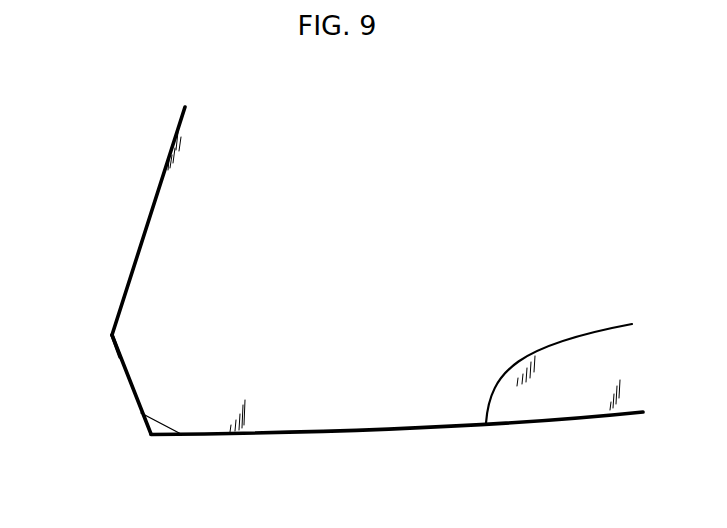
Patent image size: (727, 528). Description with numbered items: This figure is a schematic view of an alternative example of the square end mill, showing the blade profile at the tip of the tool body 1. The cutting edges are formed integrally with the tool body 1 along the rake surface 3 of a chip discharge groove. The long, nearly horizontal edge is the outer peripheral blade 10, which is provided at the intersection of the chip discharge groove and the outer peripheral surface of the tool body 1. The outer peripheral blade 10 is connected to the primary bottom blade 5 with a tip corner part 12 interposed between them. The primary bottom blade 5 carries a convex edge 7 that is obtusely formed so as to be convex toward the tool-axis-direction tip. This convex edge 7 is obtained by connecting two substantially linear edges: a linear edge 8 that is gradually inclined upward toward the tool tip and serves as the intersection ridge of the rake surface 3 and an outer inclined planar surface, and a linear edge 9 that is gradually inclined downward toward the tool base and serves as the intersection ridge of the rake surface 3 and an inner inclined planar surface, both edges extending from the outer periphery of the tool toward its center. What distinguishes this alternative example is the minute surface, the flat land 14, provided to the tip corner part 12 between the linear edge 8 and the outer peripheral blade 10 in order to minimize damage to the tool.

The tool body 1 is at (578, 418).
The rake surface 3 is at (405, 405).
The primary bottom blade 5 is at (80, 232).
The convex edge 7 is at (102, 331).
The linear edge 8 is at (125, 373).
The linear edge 9 is at (176, 144).
The outer peripheral blade 10 is at (305, 434).
The tip corner part 12 is at (137, 438).
The flat land 14 is at (161, 433).